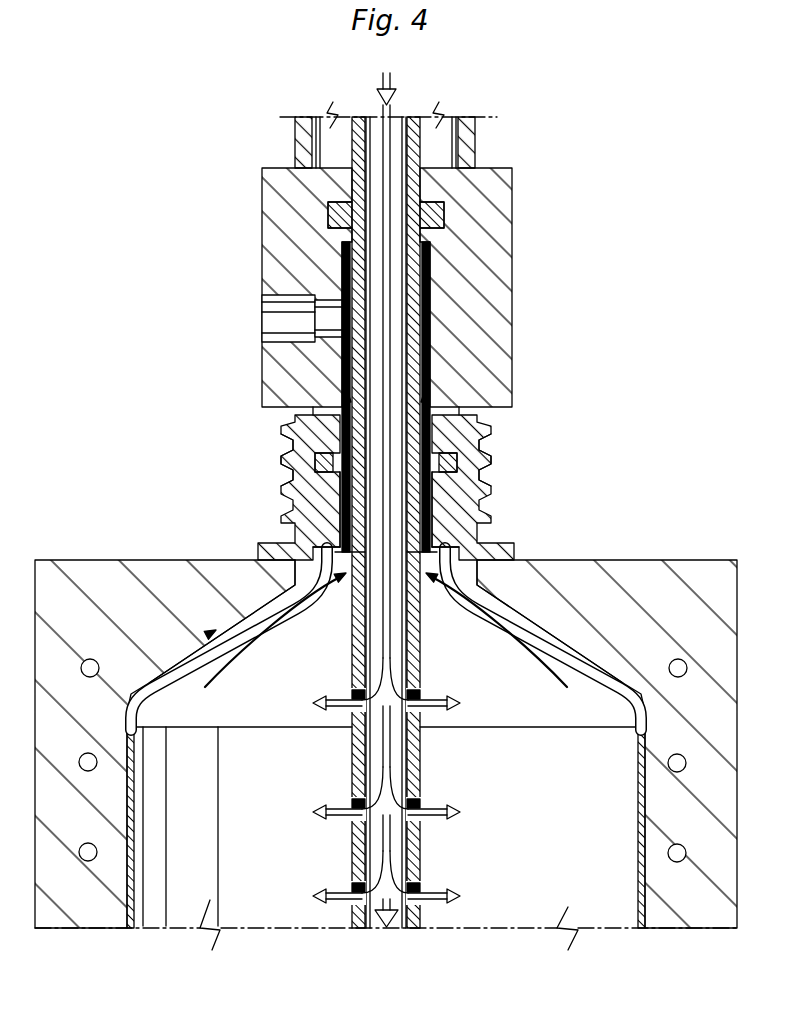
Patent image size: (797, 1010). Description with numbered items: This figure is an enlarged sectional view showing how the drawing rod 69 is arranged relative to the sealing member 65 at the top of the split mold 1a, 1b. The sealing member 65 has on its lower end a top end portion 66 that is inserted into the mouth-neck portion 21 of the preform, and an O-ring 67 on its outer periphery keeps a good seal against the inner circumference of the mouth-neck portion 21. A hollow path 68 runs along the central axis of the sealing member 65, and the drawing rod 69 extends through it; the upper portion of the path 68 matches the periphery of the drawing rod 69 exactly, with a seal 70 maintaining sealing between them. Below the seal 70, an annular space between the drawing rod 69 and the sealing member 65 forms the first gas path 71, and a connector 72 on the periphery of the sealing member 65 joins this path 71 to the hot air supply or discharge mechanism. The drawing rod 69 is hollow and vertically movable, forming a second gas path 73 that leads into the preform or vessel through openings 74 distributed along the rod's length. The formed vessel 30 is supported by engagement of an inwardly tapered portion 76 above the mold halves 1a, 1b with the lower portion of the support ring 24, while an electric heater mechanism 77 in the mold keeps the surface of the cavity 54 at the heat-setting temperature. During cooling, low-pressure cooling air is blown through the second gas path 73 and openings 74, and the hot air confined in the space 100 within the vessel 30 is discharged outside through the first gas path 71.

The split mold half 1a is at (662, 620).
The split mold half 1b is at (133, 616).
The mouth-neck portion 21 is at (493, 476).
The support ring 24 is at (480, 560).
The formed vessel 30 is at (145, 683).
The cavity 54 is at (127, 785).
The sealing member 65 is at (526, 265).
The top end portion 66 is at (445, 513).
The O-ring 67 is at (493, 443).
The hollow path 68 is at (414, 188).
The drawing rod 69 is at (418, 659).
The seal 70 is at (440, 217).
The first gas path 71 is at (423, 329).
The connector 72 is at (272, 335).
The second gas path 73 is at (395, 301).
The openings 74 is at (346, 722).
The inwardly tapered portion 76 is at (276, 577).
The electric heater mechanism 77 is at (97, 760).
The space 100 is at (513, 879).